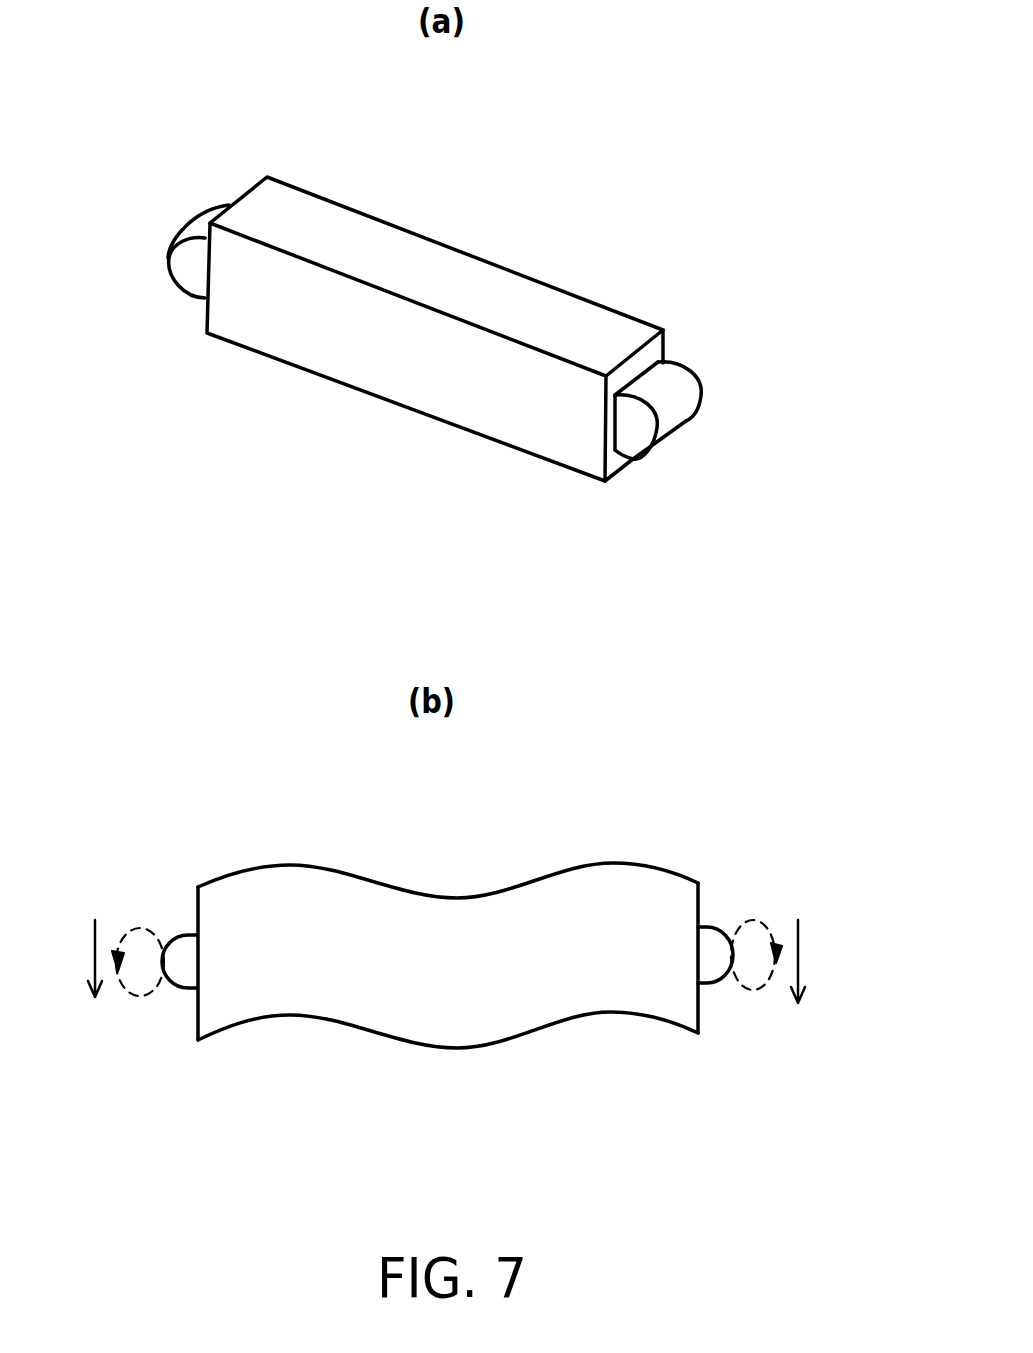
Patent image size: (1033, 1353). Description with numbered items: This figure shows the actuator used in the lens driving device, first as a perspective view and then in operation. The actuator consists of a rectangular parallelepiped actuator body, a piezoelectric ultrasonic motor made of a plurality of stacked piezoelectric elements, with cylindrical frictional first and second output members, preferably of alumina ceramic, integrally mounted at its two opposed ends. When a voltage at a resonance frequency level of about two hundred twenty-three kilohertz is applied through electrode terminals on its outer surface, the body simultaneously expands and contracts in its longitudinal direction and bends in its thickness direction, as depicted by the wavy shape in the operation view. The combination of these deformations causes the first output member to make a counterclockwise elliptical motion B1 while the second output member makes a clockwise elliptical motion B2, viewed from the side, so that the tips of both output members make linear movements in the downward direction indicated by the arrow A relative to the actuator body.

The counterclockwise elliptical motion B1 is at (138, 942).
The clockwise elliptical motion B2 is at (756, 935).
The arrow indicating downward direction A is at (444, 961).